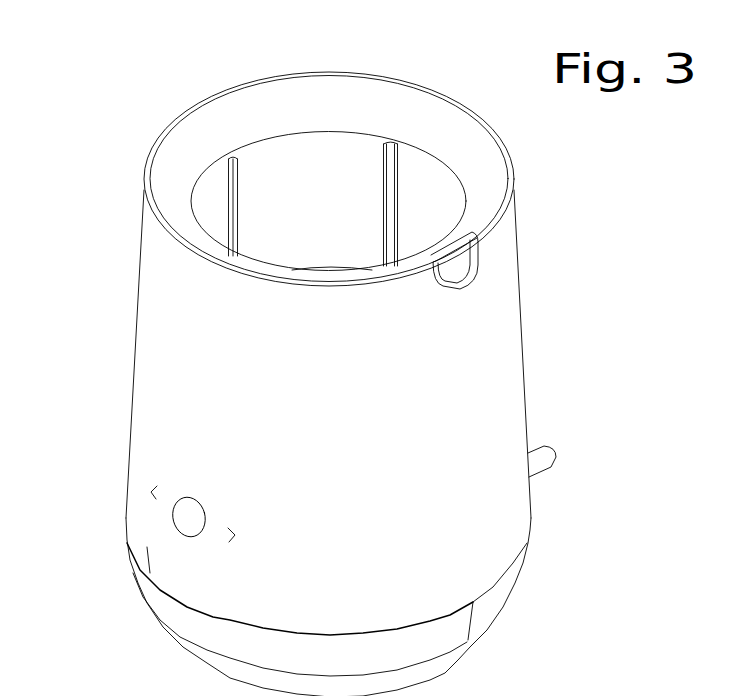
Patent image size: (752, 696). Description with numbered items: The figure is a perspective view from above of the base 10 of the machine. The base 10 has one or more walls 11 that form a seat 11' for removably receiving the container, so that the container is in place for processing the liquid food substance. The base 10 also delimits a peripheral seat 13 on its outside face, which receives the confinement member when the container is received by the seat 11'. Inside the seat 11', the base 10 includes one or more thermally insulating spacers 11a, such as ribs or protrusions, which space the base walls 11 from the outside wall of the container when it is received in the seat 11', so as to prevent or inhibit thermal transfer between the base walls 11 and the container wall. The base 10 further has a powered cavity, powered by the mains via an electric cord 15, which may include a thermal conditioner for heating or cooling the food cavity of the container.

The base 10 is at (145, 443).
The wall 11 is at (328, 180).
The seat 11' is at (328, 145).
The thermally insulating spacer 11a is at (387, 167).
The peripheral seat 13 is at (444, 294).
The electric cord 15 is at (545, 458).